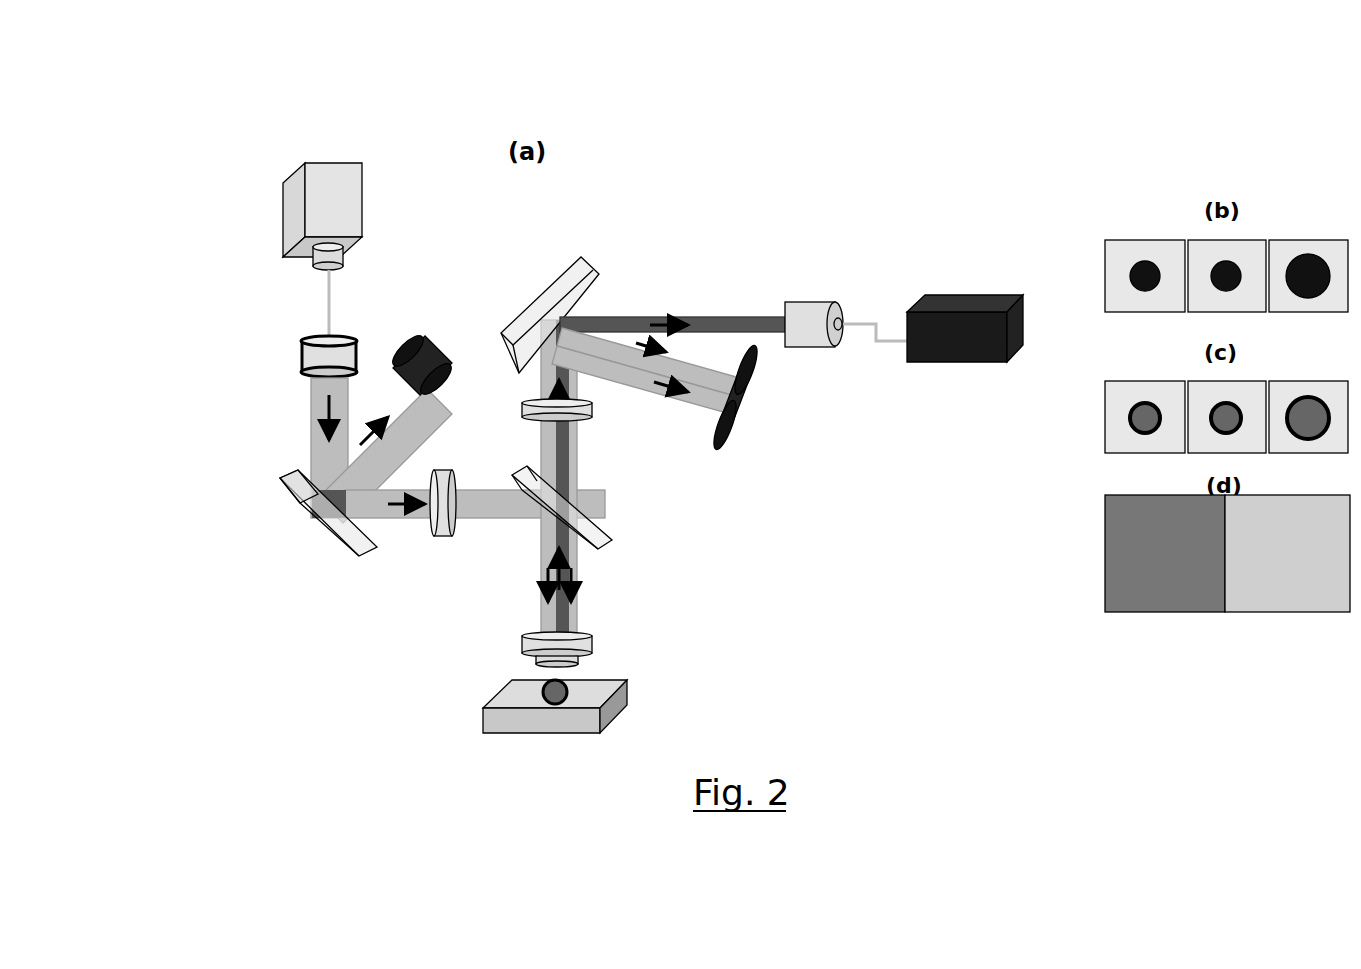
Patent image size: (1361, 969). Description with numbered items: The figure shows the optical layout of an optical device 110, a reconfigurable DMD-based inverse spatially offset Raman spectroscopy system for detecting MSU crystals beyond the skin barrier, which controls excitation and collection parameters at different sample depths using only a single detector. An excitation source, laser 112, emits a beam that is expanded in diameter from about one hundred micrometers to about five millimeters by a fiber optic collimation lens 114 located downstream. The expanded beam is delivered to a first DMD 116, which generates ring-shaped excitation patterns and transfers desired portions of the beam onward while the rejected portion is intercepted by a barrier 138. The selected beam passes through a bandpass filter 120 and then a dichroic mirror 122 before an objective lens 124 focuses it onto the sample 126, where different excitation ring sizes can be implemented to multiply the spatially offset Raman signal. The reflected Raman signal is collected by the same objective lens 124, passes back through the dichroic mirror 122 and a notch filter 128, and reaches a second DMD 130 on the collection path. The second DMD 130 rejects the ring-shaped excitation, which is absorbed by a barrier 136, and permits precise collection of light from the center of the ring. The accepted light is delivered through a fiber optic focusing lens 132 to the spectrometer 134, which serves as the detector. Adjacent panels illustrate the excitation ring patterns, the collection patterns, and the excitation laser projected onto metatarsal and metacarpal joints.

The optical device 110 is at (160, 221).
The laser 112 is at (280, 193).
The fiber optic collimation lens 114 is at (298, 338).
The first DMD 116 is at (316, 524).
The bandpass filter 120 is at (452, 527).
The dichroic mirror 122 is at (592, 498).
The objective lens 124 is at (585, 636).
The sample 126 is at (473, 713).
The notch filter 128 is at (534, 426).
The second DMD 130 is at (557, 268).
The fiber optic focusing lens 132 is at (788, 306).
The spectrometer 134 is at (1022, 352).
The barrier 136 is at (755, 395).
The barrier 138 is at (430, 312).